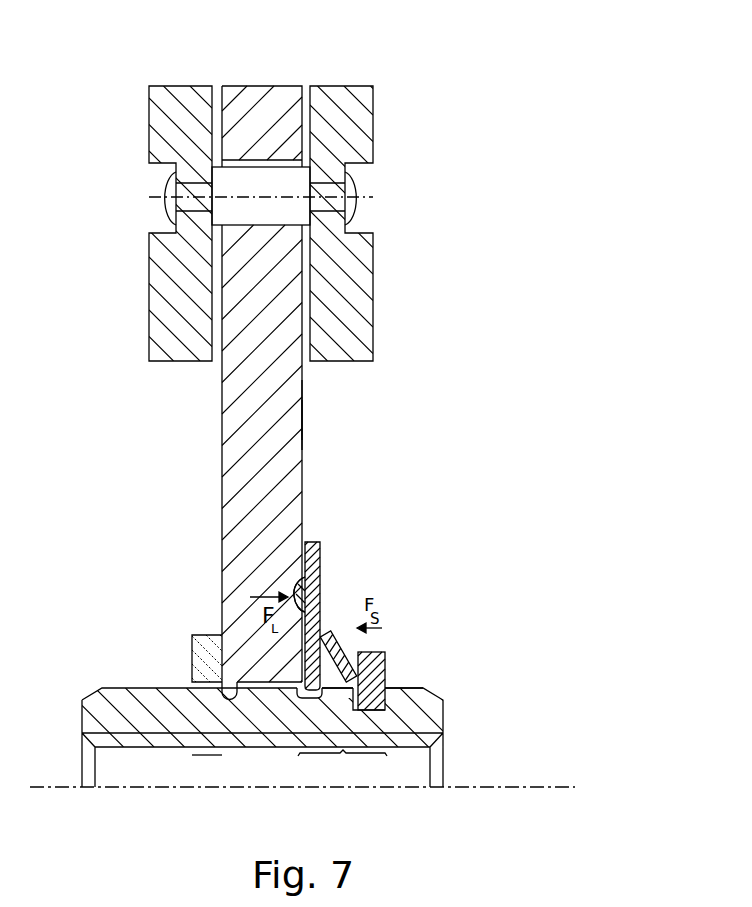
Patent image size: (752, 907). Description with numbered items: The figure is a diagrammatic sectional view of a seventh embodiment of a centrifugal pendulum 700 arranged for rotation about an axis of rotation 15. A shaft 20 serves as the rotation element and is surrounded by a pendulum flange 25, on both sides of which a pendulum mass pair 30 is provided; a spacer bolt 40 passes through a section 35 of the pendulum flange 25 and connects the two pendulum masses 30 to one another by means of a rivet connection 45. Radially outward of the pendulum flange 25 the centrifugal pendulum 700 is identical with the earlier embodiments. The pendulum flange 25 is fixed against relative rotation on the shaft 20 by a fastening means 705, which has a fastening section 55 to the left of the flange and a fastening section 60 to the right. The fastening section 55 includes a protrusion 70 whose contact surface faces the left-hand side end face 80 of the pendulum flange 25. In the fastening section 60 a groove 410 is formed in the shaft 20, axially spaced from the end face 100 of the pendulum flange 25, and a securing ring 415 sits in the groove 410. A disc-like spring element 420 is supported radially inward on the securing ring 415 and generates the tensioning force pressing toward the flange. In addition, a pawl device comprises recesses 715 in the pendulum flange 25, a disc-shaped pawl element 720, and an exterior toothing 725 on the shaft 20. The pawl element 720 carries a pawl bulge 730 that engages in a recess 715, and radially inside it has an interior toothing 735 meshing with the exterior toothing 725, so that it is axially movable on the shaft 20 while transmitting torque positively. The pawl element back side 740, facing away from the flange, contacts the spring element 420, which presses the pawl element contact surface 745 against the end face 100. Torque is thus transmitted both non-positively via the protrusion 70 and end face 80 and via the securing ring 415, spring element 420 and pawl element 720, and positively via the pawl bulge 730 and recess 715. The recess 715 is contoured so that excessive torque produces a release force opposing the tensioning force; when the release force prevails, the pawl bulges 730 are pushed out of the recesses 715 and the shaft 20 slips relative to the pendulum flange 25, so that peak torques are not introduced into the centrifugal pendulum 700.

The axis of rotation 15 is at (568, 787).
The shaft 20 is at (443, 718).
The pendulum flange 25 is at (302, 407).
The pendulum mass pair 30 is at (163, 300).
The section 35 is at (249, 158).
The spacer bolt 40 is at (303, 185).
The rivet connection 45 is at (175, 207).
The fastening section 55 is at (208, 772).
The fastening section 60 is at (342, 769).
The protrusion 70 is at (193, 634).
The left-hand side end face 80 is at (222, 425).
The end face 100 is at (302, 422).
The groove 410 is at (400, 687).
The securing ring 415 is at (386, 657).
The disc-like spring element 420 is at (327, 637).
The centrifugal pendulum 700 is at (537, 568).
The fastening means 705 is at (428, 537).
The recess 715 is at (299, 578).
The pawl element 720 is at (320, 555).
The exterior toothing 725 is at (326, 693).
The pawl bulge 730 is at (297, 592).
The interior toothing 735 is at (303, 694).
The pawl element back side 740 is at (322, 620).
The pawl element contact surface 745 is at (207, 670).